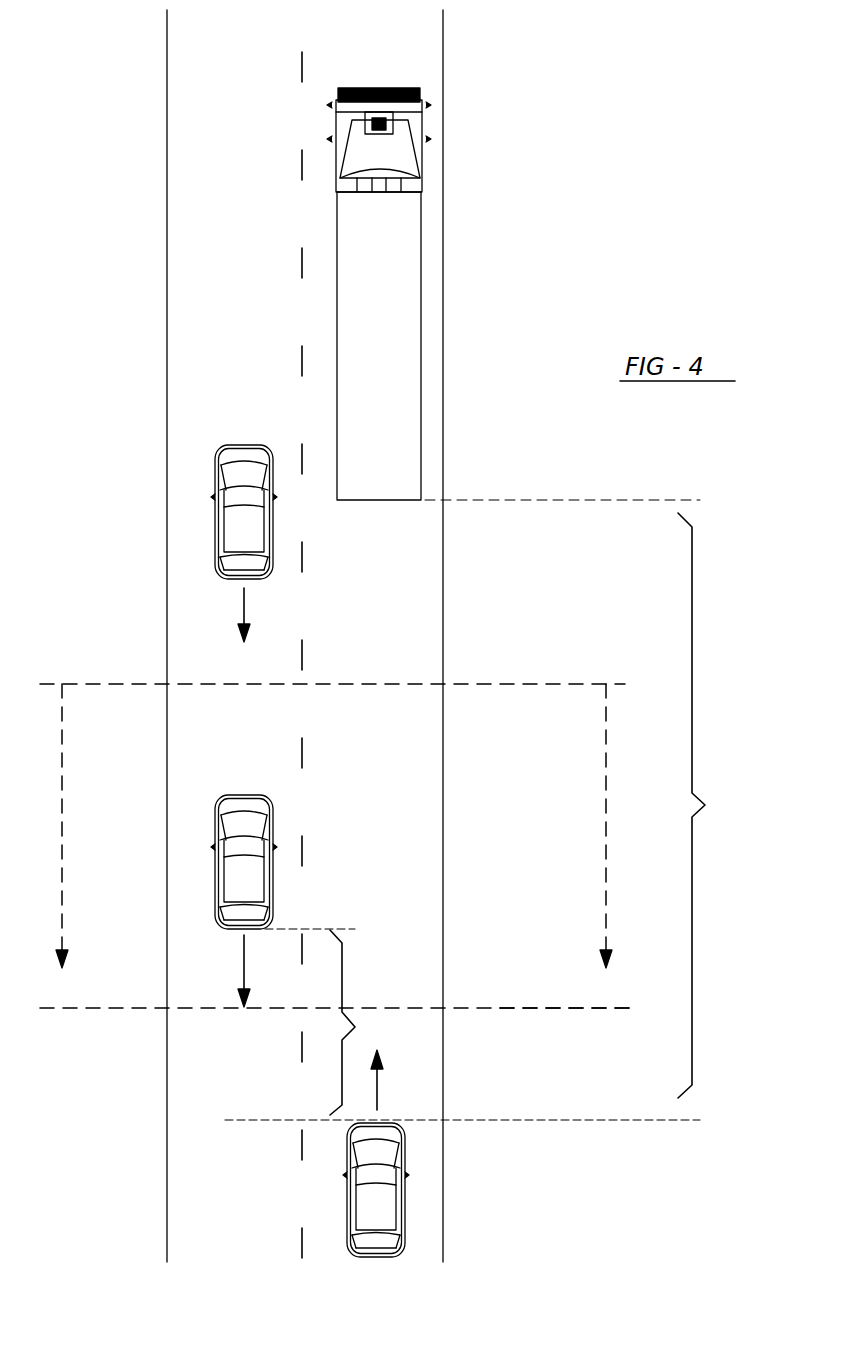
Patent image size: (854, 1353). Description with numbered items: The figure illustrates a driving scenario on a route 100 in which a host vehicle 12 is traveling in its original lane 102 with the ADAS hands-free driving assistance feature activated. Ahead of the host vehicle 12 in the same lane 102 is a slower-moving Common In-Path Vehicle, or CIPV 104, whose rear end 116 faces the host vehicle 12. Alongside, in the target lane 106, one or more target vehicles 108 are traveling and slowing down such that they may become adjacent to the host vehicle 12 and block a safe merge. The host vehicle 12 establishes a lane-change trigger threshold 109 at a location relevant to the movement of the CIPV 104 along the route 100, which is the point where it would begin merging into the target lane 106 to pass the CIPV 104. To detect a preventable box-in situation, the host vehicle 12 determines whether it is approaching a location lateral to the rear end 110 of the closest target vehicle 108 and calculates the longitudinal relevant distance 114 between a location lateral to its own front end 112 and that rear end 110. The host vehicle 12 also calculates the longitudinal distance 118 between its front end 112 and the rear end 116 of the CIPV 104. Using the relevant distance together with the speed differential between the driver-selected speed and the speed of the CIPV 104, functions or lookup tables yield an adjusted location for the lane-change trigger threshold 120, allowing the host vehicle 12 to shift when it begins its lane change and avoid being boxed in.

The route 100 is at (552, 158).
The original lane 102 is at (403, 53).
The Common In-Path Vehicle (CIPV) 104 is at (390, 348).
The target lane 106 is at (263, 53).
The target vehicles 108 is at (240, 522).
The lane-change trigger threshold 109 is at (545, 684).
The rear end of closest target vehicle 110 is at (240, 930).
The front end of host vehicle 112 is at (383, 1122).
The relevant distance 114 is at (355, 1027).
The rear end of CIPV 116 is at (378, 500).
The relevant distance 118 is at (719, 805).
The adjusted lane-change trigger threshold 120 is at (527, 1008).
The host vehicle 12 is at (405, 1205).